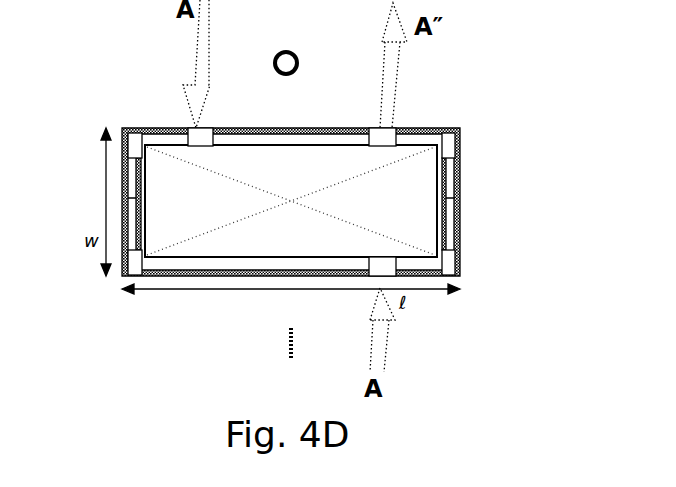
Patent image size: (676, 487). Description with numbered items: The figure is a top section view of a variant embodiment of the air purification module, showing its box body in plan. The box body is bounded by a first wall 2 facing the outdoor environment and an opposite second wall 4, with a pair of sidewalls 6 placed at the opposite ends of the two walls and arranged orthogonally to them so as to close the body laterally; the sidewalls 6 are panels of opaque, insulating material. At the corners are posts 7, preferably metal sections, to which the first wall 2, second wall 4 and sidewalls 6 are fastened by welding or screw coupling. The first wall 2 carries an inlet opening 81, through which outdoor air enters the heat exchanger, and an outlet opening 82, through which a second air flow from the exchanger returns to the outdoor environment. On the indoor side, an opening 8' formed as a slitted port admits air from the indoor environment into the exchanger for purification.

The first wall 2 is at (293, 143).
The second wall 4 is at (246, 257).
The sidewalls 6 is at (132, 210).
The posts 7 is at (135, 146).
The inlet opening 81 is at (197, 132).
The outlet opening 82 is at (388, 132).
The opening 8' is at (358, 295).